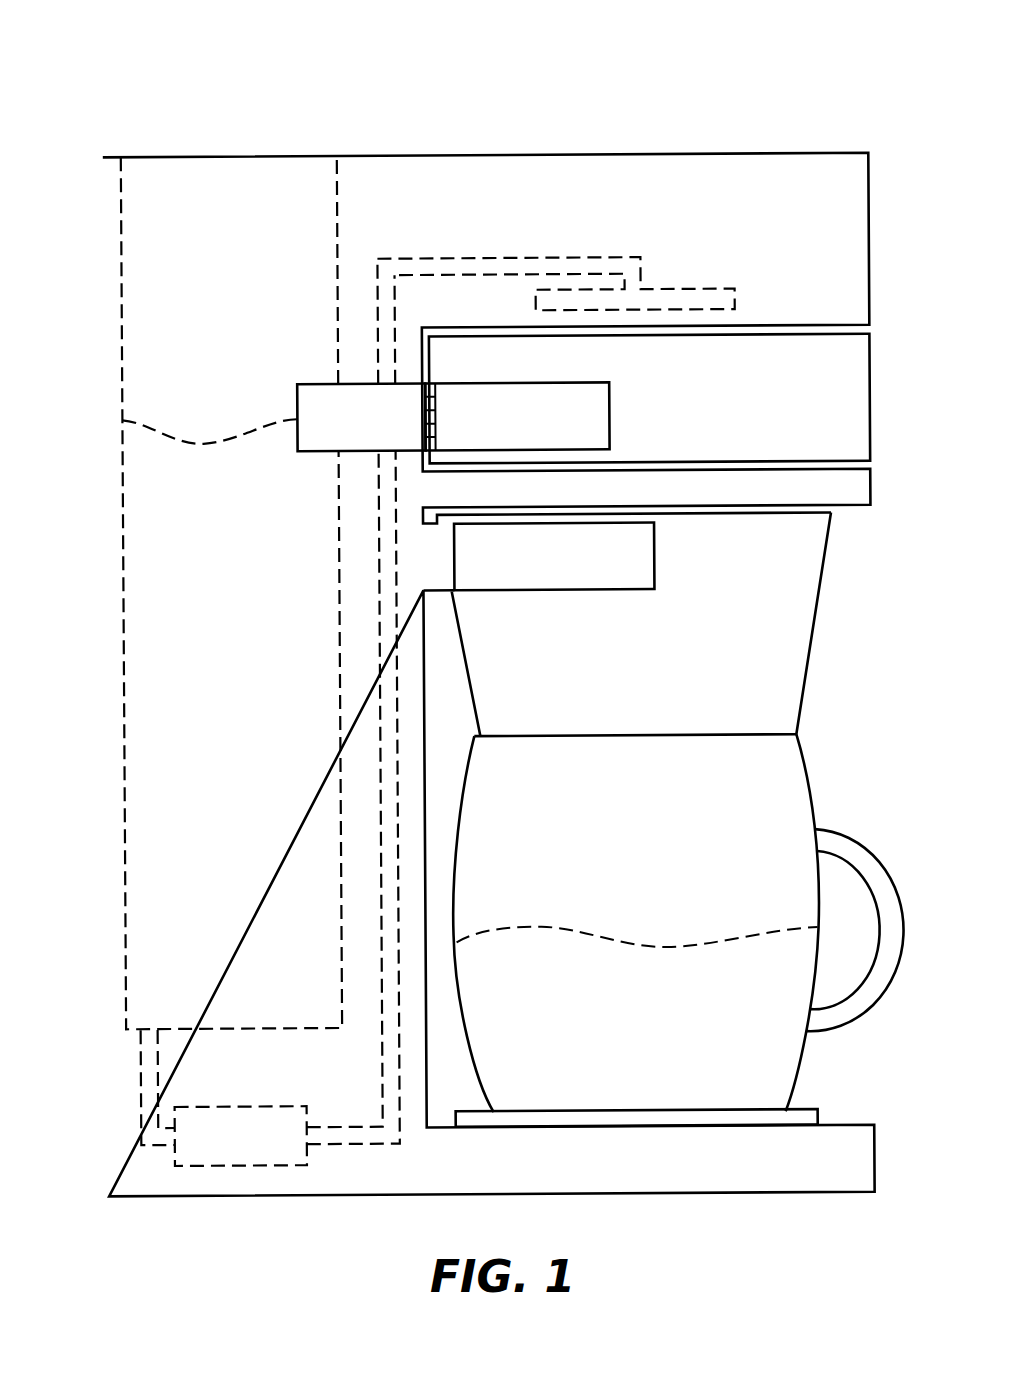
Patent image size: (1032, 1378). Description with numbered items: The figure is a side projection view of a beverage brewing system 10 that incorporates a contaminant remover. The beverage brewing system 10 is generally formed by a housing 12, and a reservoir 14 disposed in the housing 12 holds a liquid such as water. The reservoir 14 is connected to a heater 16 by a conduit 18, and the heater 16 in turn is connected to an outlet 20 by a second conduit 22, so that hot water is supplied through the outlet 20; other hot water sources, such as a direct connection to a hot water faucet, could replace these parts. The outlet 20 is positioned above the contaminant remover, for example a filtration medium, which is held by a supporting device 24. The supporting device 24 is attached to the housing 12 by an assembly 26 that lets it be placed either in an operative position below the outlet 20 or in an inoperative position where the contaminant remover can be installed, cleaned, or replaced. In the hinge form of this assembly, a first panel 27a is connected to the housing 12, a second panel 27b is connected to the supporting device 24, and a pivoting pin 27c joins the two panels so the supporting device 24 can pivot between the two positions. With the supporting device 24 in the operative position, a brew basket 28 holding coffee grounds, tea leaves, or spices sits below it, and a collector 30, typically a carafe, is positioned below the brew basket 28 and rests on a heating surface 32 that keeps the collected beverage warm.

The beverage brewing system 10 is at (488, 599).
The housing 12 is at (415, 153).
The reservoir 14 is at (124, 518).
The heater 16 is at (230, 1138).
The conduit 18 is at (146, 1096).
The outlet 20 is at (678, 304).
The conduit 22 is at (380, 1126).
The supporting device 24 is at (843, 370).
The assembly 26 is at (515, 398).
The first panel 27a is at (361, 417).
The second panel 27b is at (517, 416).
The pivoting pin 27c is at (431, 383).
The brew basket 28 is at (627, 624).
The collector 30 is at (678, 924).
The heating surface 32 is at (806, 1118).